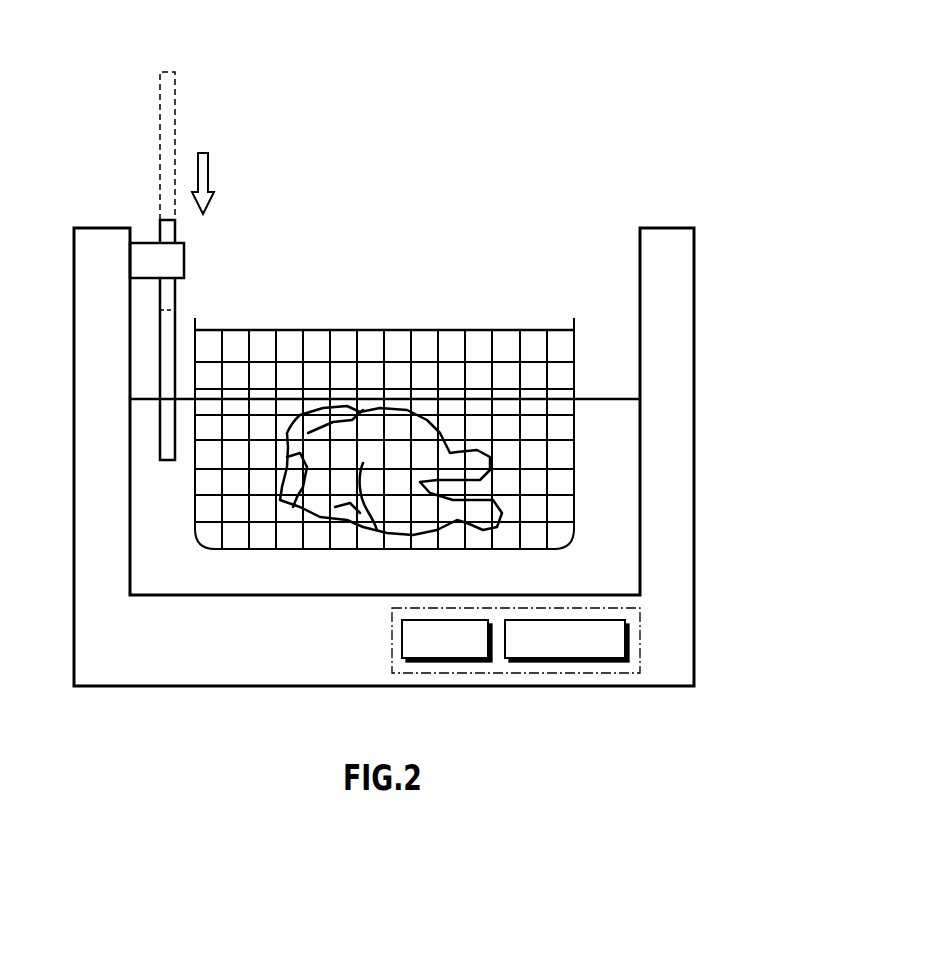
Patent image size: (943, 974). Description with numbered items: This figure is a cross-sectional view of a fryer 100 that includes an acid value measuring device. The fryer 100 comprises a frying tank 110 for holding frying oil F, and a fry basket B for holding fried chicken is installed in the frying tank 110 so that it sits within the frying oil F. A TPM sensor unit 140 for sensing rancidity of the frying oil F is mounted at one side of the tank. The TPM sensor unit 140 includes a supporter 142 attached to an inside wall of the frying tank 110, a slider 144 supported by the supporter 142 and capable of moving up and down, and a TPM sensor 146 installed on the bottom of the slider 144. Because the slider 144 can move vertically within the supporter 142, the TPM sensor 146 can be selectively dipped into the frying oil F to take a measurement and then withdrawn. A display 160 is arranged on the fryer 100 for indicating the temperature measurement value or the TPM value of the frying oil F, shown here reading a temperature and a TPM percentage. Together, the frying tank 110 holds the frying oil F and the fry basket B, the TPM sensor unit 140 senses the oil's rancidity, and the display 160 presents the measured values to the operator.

The fryer 100 is at (440, 82).
The frying tank 110 is at (695, 277).
The TPM sensor unit 140 is at (266, 266).
The supporter 142 is at (178, 257).
The slider 144 is at (178, 317).
The TPM sensor 146 is at (177, 453).
The display 160 is at (640, 642).
The fry basket B is at (457, 330).
The frying oil F is at (615, 487).